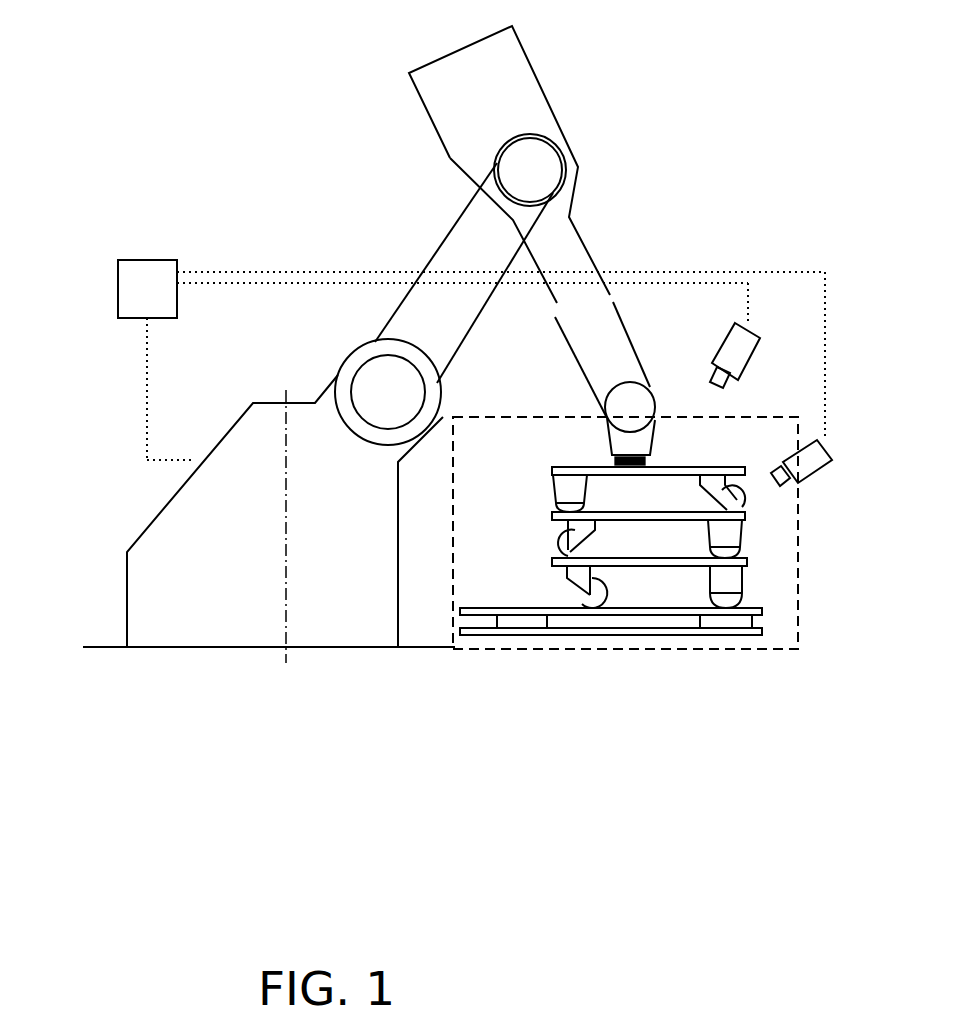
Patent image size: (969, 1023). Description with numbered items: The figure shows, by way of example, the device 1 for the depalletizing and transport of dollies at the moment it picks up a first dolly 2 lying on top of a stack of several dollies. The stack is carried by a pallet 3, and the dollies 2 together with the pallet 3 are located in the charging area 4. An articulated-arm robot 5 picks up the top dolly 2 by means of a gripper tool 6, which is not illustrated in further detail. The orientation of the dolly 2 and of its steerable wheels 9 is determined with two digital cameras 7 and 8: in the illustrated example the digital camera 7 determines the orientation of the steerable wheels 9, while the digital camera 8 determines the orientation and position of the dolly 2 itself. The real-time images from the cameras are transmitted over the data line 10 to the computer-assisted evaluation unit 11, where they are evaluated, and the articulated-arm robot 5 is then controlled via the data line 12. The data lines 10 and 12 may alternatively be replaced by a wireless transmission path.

The device for the depalletizing and transport of dollies 1 is at (288, 105).
The dolly 2 is at (567, 468).
The pallet 3 is at (532, 625).
The charging area 4 is at (800, 640).
The articulated-arm robot 5 is at (262, 422).
The gripper tool 6 is at (612, 452).
The digital camera 7 is at (812, 457).
The digital camera 8 is at (730, 350).
The steerable wheels 9 is at (582, 595).
The data line 10 is at (688, 282).
The computer-assisted evaluation unit 11 is at (147, 277).
The data line 12 is at (147, 435).